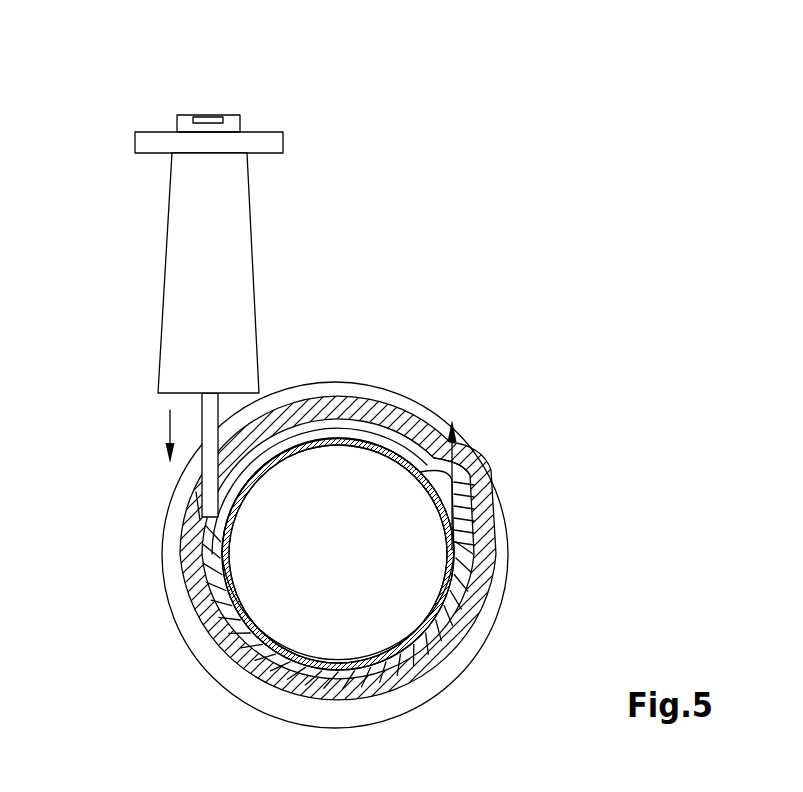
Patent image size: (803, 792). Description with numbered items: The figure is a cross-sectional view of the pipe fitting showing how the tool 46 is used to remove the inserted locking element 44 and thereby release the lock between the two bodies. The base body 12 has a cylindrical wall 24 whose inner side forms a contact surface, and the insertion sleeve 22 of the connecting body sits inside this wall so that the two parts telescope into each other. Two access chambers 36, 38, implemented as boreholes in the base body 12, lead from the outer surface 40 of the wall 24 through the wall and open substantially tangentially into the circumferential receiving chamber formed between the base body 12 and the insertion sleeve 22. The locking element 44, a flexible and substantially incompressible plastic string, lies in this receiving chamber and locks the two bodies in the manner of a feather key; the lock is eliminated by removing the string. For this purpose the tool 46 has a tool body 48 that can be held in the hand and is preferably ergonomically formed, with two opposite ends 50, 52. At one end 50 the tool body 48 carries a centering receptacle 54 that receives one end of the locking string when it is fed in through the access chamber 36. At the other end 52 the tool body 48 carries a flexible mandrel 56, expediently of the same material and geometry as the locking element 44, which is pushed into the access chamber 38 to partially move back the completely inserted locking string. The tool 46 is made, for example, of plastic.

The base body 12 is at (520, 583).
The insertion sleeve 22 is at (258, 477).
The wall 24 is at (472, 632).
The access chamber 36 is at (462, 487).
The access chamber 38 is at (195, 500).
The outer surface 40 is at (267, 412).
The locking element 44 is at (480, 549).
The tool 46 is at (120, 262).
The tool body 48 is at (212, 265).
The end 50 is at (335, 125).
The end 52 is at (120, 405).
The receptacle 54 is at (205, 115).
The mandrel 56 is at (185, 485).